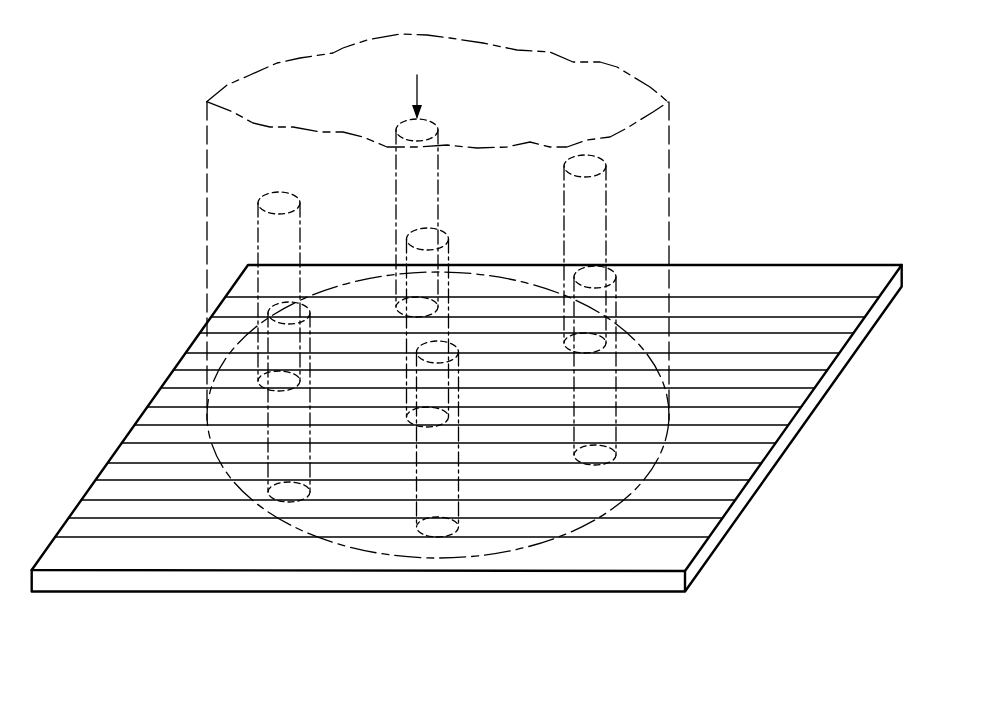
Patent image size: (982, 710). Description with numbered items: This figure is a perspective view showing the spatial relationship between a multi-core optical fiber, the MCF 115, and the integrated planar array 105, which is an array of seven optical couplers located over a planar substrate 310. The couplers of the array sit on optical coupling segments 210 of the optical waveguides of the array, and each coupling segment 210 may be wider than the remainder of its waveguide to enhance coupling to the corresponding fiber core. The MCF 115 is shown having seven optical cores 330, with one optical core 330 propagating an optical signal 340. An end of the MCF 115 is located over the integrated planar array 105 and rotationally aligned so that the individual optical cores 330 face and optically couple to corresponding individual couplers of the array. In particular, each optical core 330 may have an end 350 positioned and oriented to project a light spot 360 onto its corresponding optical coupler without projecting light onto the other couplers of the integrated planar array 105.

The integrated planar array 105 is at (467, 340).
The multi-core optical fiber 115 is at (206, 215).
The optical coupling segment 210 is at (703, 307).
The planar substrate 310 is at (786, 263).
The optical core 330 is at (396, 173).
The optical signal 340 is at (417, 92).
The end 350 is at (437, 527).
The light spot 360 is at (436, 493).